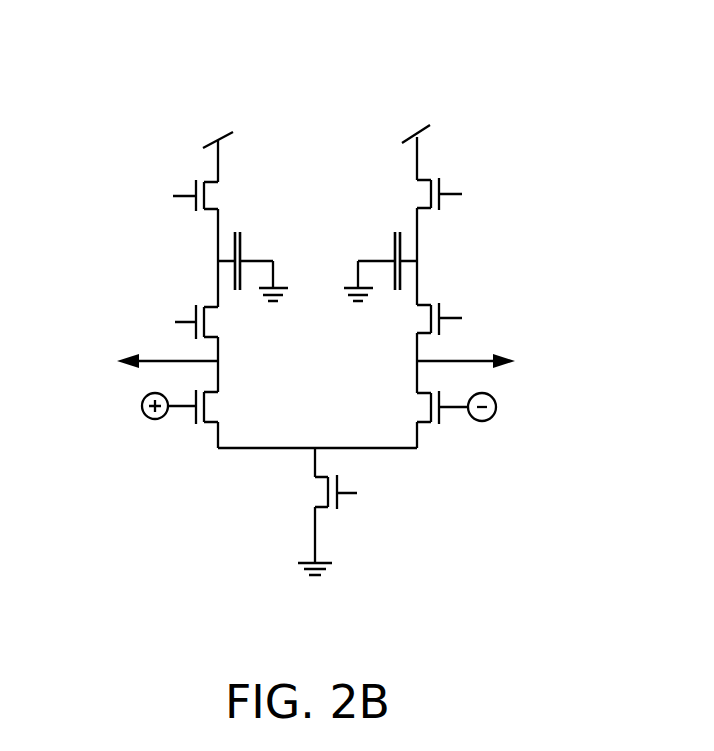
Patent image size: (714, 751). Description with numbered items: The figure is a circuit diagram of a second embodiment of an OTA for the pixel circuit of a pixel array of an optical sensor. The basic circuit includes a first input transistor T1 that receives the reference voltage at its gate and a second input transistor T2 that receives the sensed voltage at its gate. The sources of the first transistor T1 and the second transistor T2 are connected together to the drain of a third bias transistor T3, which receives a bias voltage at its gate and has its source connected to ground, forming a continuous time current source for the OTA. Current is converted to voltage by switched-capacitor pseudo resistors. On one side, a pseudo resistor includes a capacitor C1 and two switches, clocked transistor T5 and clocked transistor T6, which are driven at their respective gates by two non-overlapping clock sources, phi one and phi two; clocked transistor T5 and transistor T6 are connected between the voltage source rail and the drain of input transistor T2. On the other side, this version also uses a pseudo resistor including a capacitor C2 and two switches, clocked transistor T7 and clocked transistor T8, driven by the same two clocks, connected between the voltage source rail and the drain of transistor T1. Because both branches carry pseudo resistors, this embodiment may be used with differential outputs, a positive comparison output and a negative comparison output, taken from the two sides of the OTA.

The operational transconductance amplifier OTA is at (176, 83).
The first input transistor T1 is at (205, 407).
The second input transistor T2 is at (430, 408).
The third bias transistor T3 is at (328, 493).
The clocked transistor T5 is at (430, 193).
The clocked transistor T6 is at (430, 320).
The clocked transistor T7 is at (205, 198).
The clocked transistor T8 is at (206, 331).
The capacitor C1 is at (394, 250).
The capacitor C2 is at (241, 251).